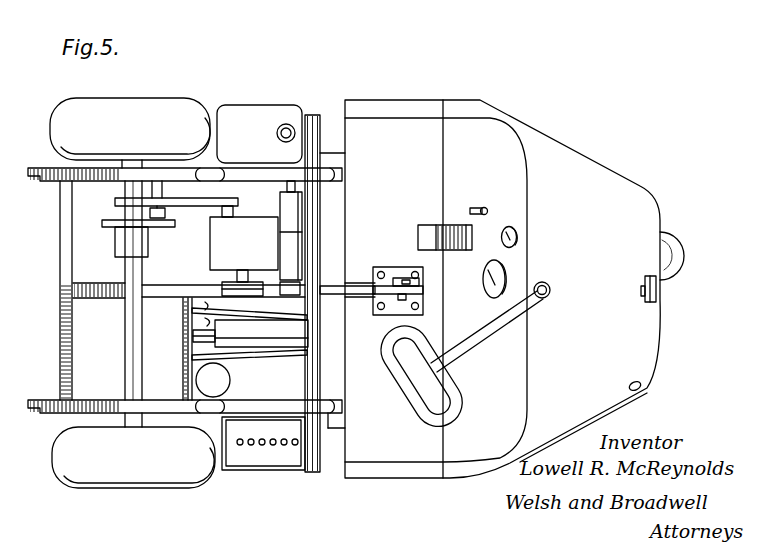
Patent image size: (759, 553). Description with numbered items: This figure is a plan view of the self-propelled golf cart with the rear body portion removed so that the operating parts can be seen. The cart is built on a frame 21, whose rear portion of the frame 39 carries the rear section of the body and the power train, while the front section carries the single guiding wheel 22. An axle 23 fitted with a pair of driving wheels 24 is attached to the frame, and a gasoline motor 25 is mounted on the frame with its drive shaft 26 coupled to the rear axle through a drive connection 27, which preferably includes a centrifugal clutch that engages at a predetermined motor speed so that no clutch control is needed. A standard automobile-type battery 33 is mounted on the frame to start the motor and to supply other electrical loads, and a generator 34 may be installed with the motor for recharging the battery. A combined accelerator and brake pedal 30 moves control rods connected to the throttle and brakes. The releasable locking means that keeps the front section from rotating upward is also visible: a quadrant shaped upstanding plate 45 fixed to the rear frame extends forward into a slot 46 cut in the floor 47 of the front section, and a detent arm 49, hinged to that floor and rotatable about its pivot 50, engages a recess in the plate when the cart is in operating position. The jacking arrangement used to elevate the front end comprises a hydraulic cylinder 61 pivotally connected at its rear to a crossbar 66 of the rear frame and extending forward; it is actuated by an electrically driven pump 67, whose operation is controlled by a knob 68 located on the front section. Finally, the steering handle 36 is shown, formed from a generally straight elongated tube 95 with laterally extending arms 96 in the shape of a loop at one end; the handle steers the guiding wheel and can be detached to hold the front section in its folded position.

The frame 21 is at (85, 169).
The guiding wheel 22 is at (677, 243).
The axle 23 is at (128, 335).
The driving wheels 24 is at (81, 100).
The gasoline motor 25 is at (255, 251).
The drive shaft 26 is at (233, 217).
The drive connection 27 is at (163, 232).
The combined accelerator and brake pedal 30 is at (450, 234).
The battery 33 is at (257, 453).
The generator 34 is at (290, 203).
The steering handle 36 is at (500, 328).
The rear portion of the frame 39 is at (58, 414).
The quadrant shaped upstanding plate 45 is at (335, 287).
The slot 46 is at (357, 283).
The floor 47 is at (502, 289).
The detent arm 49 is at (390, 283).
The pivot 50 is at (398, 278).
The hydraulic cylinder 61 is at (275, 337).
The crossbar 66 is at (186, 342).
The electrically driven pump 67 is at (217, 380).
The knob 68 is at (650, 388).
The elongated tube 95 is at (474, 342).
The laterally extending arms 96 is at (406, 387).